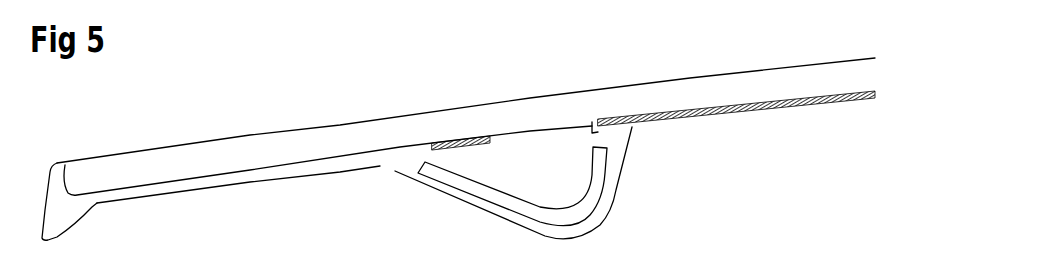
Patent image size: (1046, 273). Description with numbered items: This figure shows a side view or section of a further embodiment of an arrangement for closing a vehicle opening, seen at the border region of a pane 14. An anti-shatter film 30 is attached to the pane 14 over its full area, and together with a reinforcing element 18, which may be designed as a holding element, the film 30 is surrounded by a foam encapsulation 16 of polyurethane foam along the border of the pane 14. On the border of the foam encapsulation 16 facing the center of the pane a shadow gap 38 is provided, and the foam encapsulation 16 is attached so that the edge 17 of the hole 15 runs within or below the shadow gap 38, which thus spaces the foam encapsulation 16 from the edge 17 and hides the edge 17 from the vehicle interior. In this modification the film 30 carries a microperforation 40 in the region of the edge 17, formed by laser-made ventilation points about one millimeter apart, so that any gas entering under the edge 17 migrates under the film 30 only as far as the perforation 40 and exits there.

The pane 14 is at (795, 80).
The hole 15 is at (558, 117).
The foam encapsulation 16 is at (400, 164).
The edge 17 is at (603, 120).
The reinforcing element 18 is at (466, 183).
The anti-shatter film 30 is at (457, 143).
The shadow gap 38 is at (646, 125).
The perforation 40 is at (618, 113).